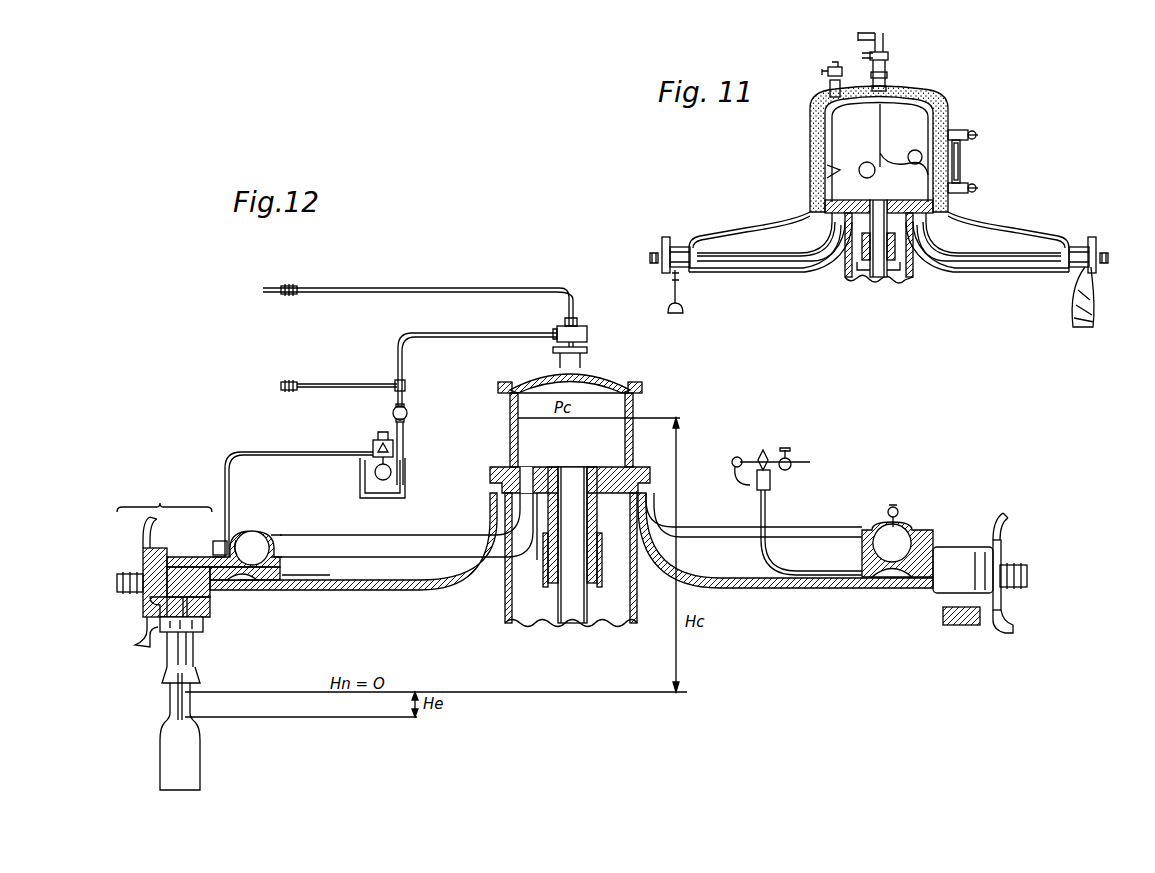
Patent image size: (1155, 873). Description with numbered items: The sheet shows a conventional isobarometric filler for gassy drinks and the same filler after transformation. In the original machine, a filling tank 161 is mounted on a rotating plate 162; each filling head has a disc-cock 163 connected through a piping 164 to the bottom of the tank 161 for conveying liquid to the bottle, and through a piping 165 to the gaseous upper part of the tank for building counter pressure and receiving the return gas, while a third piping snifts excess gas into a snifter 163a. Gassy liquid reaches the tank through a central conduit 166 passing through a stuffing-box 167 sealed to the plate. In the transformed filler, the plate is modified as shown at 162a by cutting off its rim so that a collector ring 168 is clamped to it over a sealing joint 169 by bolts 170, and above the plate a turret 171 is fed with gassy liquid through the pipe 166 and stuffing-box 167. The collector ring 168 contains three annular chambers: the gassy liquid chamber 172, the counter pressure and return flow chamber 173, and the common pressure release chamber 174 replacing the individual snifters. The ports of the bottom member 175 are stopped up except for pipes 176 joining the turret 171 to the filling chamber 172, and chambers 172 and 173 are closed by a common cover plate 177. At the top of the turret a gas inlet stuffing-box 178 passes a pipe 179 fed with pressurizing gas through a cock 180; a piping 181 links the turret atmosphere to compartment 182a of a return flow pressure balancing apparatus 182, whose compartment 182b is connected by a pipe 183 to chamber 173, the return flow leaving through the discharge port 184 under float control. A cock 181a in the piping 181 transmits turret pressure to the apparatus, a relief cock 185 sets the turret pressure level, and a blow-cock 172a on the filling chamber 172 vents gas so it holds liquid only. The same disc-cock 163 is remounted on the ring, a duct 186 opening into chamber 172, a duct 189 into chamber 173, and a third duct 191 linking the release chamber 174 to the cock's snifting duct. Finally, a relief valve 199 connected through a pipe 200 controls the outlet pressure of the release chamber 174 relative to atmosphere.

In FIG. 11, the filling tank 161 is at (942, 102).
In FIG. 11, the rotating plate 162 is at (773, 267).
In FIG. 12, the modified rotating plate 162a is at (388, 593).
In FIG. 11, the disc-cock 163 is at (665, 236).
In FIG. 12, the disc-cock 163 is at (164, 497).
In FIG. 11, the snifter 163a is at (685, 268).
In FIG. 11, the piping 164 is at (730, 260).
In FIG. 11, the piping 165 is at (723, 253).
In FIG. 11, the central conduit 166 is at (877, 265).
In FIG. 12, the central conduit 166 is at (563, 487).
In FIG. 11, the stuffing-box 167 is at (897, 243).
In FIG. 12, the stuffing-box 167 is at (547, 573).
In FIG. 12, the collector ring 168 is at (283, 546).
In FIG. 12, the sealing joint 169 is at (282, 580).
In FIG. 12, the bolts 170 is at (280, 593).
In FIG. 12, the turret 171 is at (633, 401).
In FIG. 12, the gassy liquid chamber 172 is at (263, 545).
In FIG. 12, the blow-cock 172a is at (893, 507).
In FIG. 12, the counter pressure and return flow chamber 173 is at (217, 543).
In FIG. 12, the common pressure release chamber 174 is at (243, 580).
In FIG. 12, the bottom member 175 is at (548, 467).
In FIG. 12, the pipes 176 is at (530, 508).
In FIG. 12, the common cover plate 177 is at (258, 530).
In FIG. 12, the gas inlet stuffing-box 178 is at (587, 333).
In FIG. 12, the pipe 179 is at (407, 288).
In FIG. 12, the cock 180 is at (290, 288).
In FIG. 12, the piping 181 is at (463, 333).
In FIG. 12, the cock 181a is at (405, 412).
In FIG. 12, the return flow pressure balancing apparatus 182 is at (427, 442).
In FIG. 12, the compartment 182a is at (418, 462).
In FIG. 12, the compartment 182b is at (360, 463).
In FIG. 12, the pipe 183 is at (268, 453).
In FIG. 12, the discharge port 184 is at (382, 438).
In FIG. 12, the relief cock 185 is at (292, 383).
In FIG. 12, the duct 186 is at (243, 531).
In FIG. 12, the duct 189 is at (212, 557).
In FIG. 12, the third duct 191 is at (223, 597).
In FIG. 12, the relief valve 199 is at (772, 483).
In FIG. 12, the pipe 200 is at (770, 564).